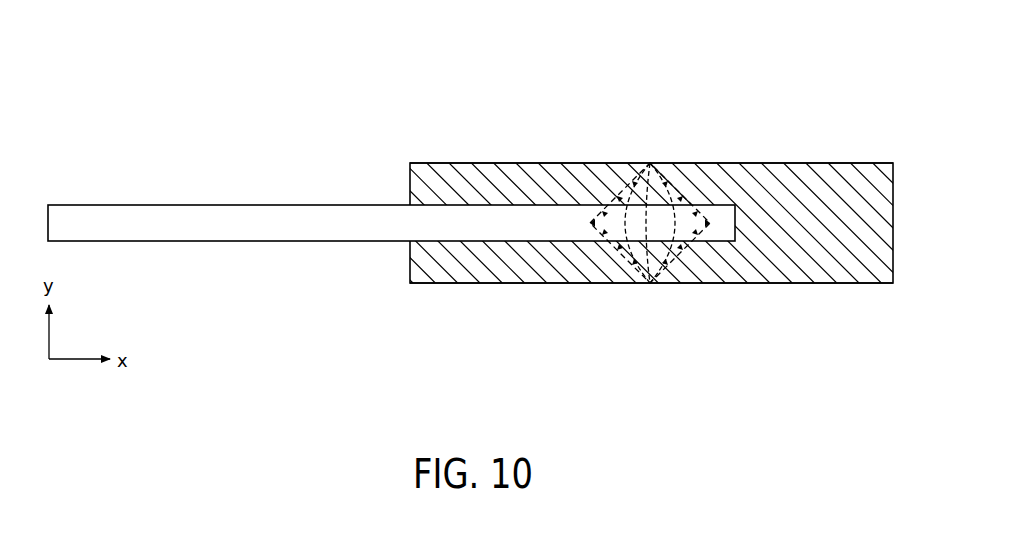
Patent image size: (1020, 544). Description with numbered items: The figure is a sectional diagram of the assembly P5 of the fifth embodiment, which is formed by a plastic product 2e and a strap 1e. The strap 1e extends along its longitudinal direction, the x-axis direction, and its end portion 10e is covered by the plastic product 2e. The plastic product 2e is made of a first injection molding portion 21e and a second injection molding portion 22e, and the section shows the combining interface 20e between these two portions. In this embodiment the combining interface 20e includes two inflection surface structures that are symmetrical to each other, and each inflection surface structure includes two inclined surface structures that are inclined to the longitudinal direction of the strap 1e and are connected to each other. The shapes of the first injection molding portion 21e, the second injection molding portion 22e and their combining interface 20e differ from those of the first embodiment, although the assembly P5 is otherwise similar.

The strap 1e is at (143, 204).
The plastic product 2e is at (411, 200).
The end portion 10e is at (738, 217).
The combining interface 20e is at (618, 253).
The first injection molding portion 21e is at (648, 165).
The second injection molding portion 22e is at (411, 268).
The assembly P5 is at (178, 93).